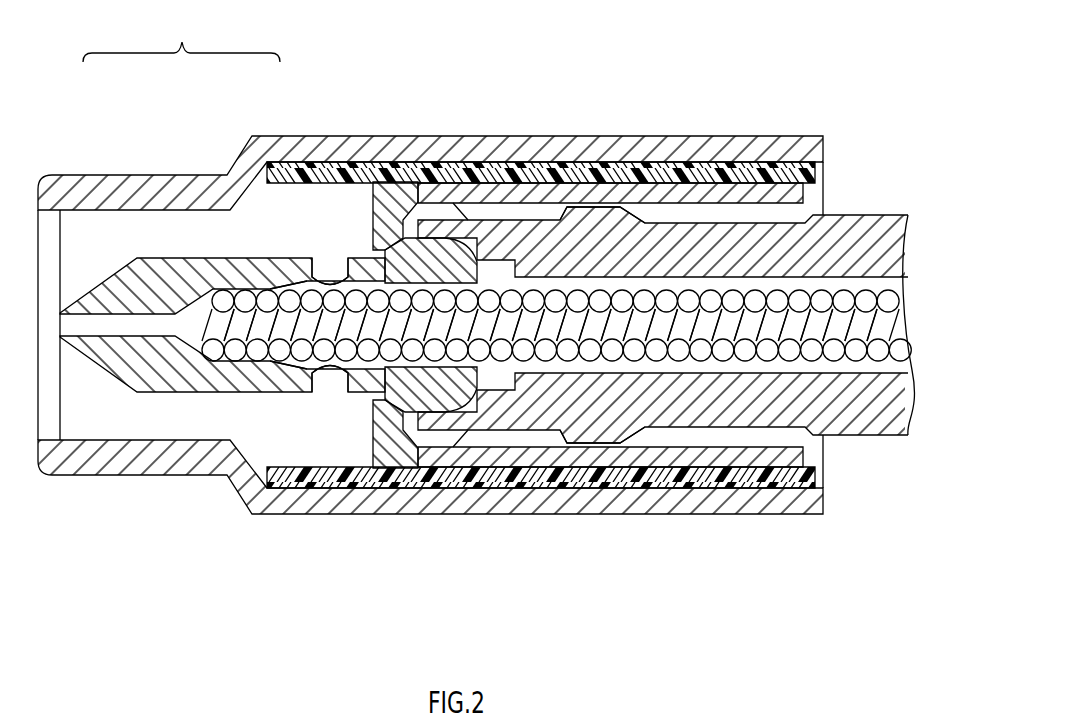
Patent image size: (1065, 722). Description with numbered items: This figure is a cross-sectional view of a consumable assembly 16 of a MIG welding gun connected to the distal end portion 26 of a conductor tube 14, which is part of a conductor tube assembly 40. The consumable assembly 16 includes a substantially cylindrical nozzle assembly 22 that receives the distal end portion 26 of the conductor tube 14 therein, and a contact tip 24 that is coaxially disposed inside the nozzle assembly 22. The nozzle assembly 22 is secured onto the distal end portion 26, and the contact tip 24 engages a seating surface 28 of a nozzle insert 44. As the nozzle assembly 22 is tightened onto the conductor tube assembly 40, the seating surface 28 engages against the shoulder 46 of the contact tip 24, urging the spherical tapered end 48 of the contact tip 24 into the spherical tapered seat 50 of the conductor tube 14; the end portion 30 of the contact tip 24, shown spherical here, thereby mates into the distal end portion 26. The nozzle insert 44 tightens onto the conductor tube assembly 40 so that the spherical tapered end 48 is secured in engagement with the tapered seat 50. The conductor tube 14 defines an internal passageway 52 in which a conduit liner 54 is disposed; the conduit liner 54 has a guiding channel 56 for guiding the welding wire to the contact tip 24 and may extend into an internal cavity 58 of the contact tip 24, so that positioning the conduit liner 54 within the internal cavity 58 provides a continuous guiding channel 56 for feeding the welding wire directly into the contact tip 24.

The conductor tube 14 is at (861, 218).
The consumable assembly 16 is at (181, 38).
The nozzle assembly 22 is at (287, 136).
The contact tip 24 is at (165, 257).
The distal end portion 26 is at (599, 415).
The seating surface 28 is at (437, 415).
The end portion 30 is at (440, 398).
The conductor tube assembly 40 is at (284, 516).
The nozzle insert 44 is at (753, 183).
The shoulder 46 is at (330, 258).
The spherical tapered end 48 is at (410, 252).
The spherical tapered seat 50 is at (448, 252).
The internal passageway 52 is at (831, 371).
The conduit liner 54 is at (887, 288).
The guiding channel 56 is at (903, 328).
The internal cavity 58 is at (279, 366).